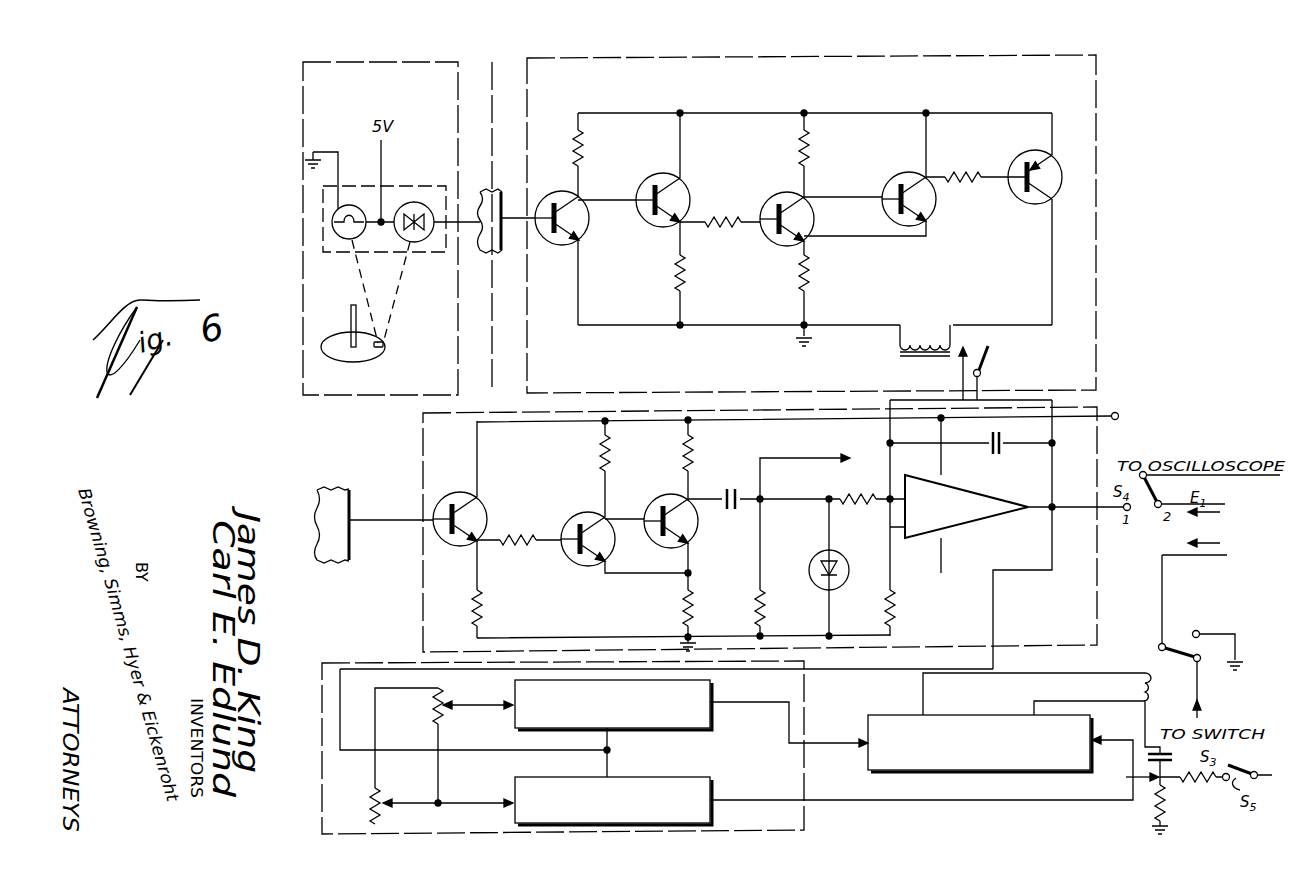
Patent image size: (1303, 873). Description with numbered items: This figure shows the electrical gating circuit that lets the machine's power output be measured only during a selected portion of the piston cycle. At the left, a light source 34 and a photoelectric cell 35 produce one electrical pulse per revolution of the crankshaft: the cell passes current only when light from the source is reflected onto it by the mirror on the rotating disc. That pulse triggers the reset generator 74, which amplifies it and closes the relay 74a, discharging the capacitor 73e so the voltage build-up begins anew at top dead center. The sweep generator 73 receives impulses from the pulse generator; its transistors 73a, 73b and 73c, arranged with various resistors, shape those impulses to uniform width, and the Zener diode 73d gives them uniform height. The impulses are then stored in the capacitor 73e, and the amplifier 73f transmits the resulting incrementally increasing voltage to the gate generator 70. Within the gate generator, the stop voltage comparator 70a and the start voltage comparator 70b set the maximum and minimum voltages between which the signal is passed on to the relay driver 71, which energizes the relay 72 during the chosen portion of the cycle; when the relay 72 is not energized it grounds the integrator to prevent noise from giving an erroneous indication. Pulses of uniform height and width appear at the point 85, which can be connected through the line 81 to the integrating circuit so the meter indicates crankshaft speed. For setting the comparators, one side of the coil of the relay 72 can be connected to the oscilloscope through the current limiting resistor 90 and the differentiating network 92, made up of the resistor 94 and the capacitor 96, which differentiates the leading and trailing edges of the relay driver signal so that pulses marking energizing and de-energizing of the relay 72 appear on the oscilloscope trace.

The light source 34 is at (330, 217).
The photoelectric cell 35 is at (412, 203).
The reset generator 74 is at (1101, 217).
The relay 74a is at (926, 361).
The sweep generator 73 is at (1102, 409).
The transistor 73a is at (486, 514).
The transistor 73b is at (570, 563).
The transistor 73c is at (660, 499).
The Zener diode 73d is at (813, 561).
The capacitor 73e is at (994, 456).
The amplifier 73f is at (966, 506).
The line 81 is at (757, 470).
The point 85 is at (766, 497).
The gate generator 70 is at (412, 640).
The stop voltage comparator 70a is at (712, 692).
The start voltage comparator 70b is at (712, 792).
The relay driver 71 is at (980, 772).
The relay 72 is at (1170, 659).
The current limiting resistor 90 is at (1192, 781).
The differentiating network 92 is at (1131, 779).
The resistor 94 is at (1150, 798).
The capacitor 96 is at (1170, 764).